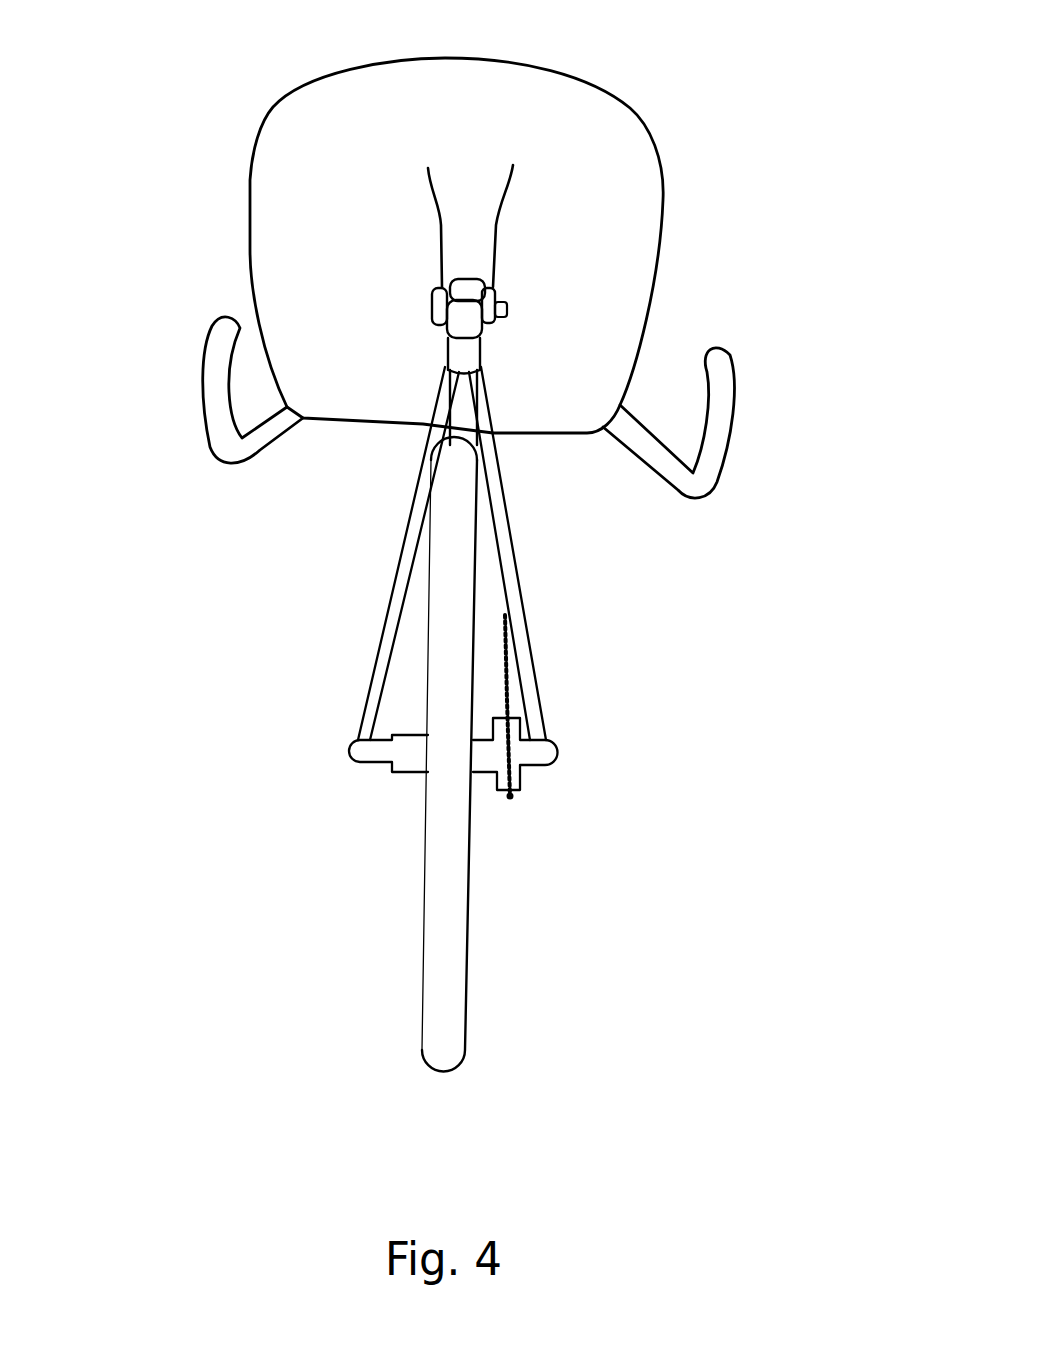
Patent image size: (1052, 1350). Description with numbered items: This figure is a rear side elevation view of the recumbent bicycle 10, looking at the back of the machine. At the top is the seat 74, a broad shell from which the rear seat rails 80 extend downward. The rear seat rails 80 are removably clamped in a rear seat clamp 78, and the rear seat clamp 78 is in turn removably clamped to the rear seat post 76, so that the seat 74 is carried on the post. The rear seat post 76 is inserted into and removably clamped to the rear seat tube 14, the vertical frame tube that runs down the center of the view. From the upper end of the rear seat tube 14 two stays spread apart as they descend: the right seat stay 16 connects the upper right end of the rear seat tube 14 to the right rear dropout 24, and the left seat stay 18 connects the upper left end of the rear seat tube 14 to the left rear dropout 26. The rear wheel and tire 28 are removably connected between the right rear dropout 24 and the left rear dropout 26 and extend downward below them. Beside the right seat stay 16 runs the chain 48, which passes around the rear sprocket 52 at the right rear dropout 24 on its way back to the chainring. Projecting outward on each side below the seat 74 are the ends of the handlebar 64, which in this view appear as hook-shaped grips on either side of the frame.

The recumbent bicycle 10 is at (685, 1015).
The rear seat tube 14 is at (482, 403).
The right seat stay 16 is at (522, 575).
The left seat stay 18 is at (388, 580).
The right rear dropout 24 is at (543, 768).
The left rear dropout 26 is at (357, 767).
The rear wheel and tire 28 is at (468, 979).
The chain 48 is at (512, 682).
The rear sprocket 52 is at (510, 800).
The handlebar 64 is at (235, 470).
The seat 74 is at (447, 52).
The rear seat post 76 is at (480, 348).
The rear seat clamp 78 is at (497, 295).
The rear seat rails 80 is at (448, 233).